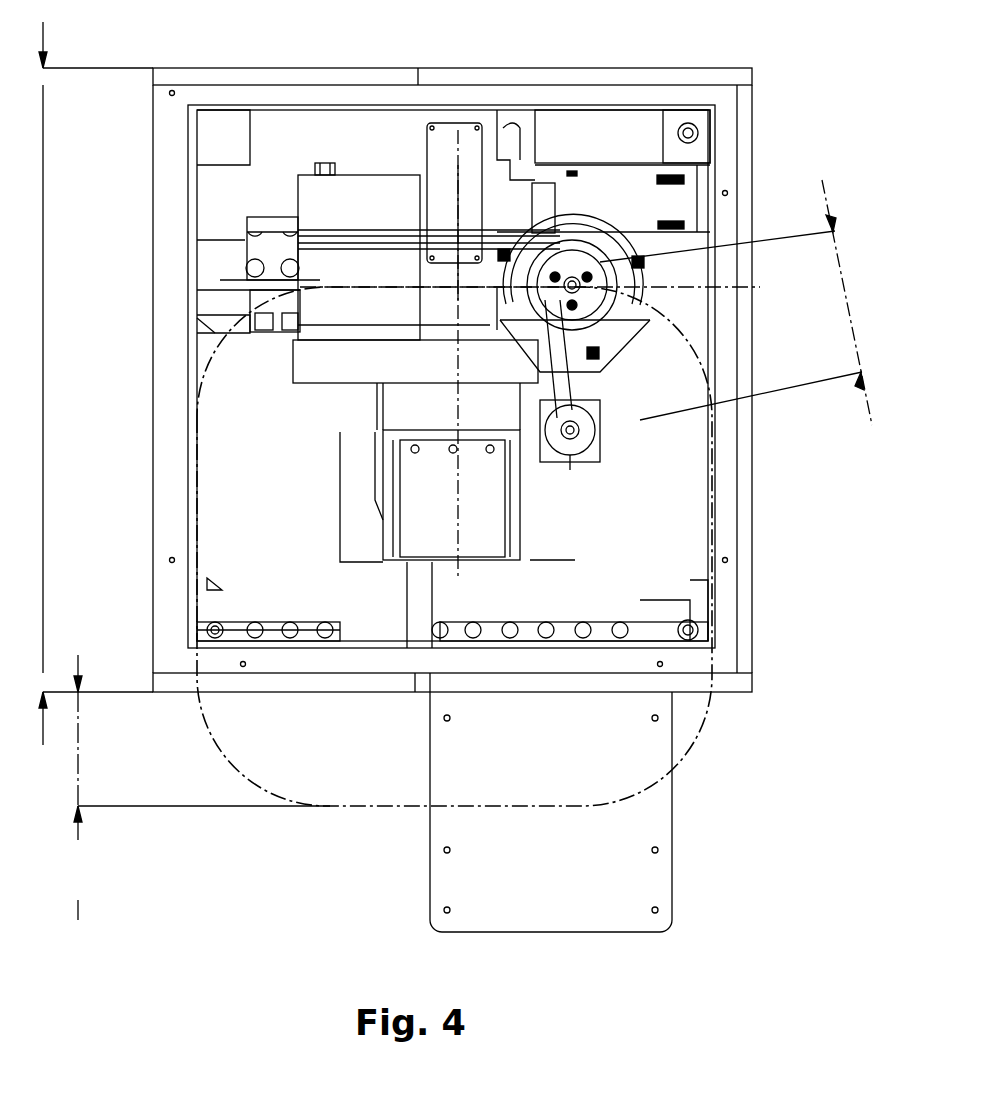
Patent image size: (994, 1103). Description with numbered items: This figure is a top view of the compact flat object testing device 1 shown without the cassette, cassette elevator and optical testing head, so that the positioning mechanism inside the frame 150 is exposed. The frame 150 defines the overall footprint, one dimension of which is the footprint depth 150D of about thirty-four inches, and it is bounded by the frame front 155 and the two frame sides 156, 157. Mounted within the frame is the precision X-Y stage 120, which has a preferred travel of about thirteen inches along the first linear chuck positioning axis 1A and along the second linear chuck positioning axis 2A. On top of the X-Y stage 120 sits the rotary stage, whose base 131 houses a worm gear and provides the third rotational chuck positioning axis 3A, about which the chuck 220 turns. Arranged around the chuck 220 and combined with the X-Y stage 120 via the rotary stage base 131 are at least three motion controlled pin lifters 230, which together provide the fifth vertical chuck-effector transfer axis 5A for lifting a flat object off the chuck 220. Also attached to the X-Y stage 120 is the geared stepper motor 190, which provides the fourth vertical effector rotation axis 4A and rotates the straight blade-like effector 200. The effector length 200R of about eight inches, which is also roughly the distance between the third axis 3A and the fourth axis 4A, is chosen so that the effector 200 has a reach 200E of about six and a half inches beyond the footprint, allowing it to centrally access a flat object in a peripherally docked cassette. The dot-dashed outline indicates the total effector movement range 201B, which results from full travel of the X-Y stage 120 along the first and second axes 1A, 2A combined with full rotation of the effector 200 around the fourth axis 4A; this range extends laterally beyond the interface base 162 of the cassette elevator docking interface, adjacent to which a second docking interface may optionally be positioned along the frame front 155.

The testing device 1 is at (178, 888).
The first linear chuck positioning X-axis 1A is at (219, 280).
The second linear chuck positioning Y-axis 2A is at (460, 183).
The third rotational chuck positioning axis 3A is at (574, 282).
The fourth vertical effector rotation axis 4A is at (595, 431).
The fifth vertical chuck-effector transfer axis 5A is at (505, 250).
The X-Y stage 120 is at (310, 195).
The rotary stage base 131 is at (605, 270).
The frame 150 is at (162, 452).
The footprint depth 150D is at (85, 383).
The frame front 155 is at (360, 710).
The frame side 156 is at (135, 520).
The frame side 157 is at (772, 548).
The interface base 162 is at (650, 832).
The geared stepper motor 190 is at (600, 452).
The effector 200 is at (673, 345).
The effector reach 200E is at (192, 787).
The effector length 200R is at (736, 302).
The total effector movement range 201B is at (221, 750).
The chuck 220 is at (625, 230).
The pin lifters 230 is at (503, 249).